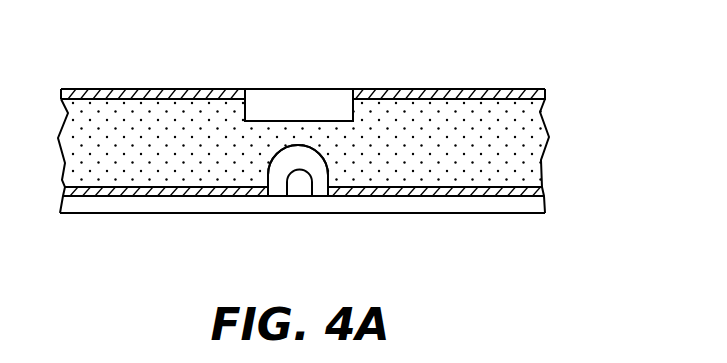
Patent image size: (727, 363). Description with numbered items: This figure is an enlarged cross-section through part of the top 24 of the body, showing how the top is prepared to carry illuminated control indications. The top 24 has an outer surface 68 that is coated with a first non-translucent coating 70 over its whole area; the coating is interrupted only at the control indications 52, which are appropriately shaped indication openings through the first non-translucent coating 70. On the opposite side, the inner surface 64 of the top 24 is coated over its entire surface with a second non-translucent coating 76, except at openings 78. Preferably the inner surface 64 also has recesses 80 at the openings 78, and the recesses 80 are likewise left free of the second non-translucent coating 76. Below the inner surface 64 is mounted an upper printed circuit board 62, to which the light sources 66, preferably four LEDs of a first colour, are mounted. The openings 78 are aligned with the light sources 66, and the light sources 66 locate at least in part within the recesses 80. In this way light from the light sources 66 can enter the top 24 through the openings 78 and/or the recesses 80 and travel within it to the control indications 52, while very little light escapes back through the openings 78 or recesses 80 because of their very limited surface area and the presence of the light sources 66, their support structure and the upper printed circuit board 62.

The top 24 is at (530, 163).
The control indications 52 is at (302, 92).
The upper printed circuit board 62 is at (428, 207).
The inner surface 64 is at (542, 177).
The light sources 66 is at (298, 183).
The outer surface 68 is at (537, 112).
The first non-translucent coating 70 is at (540, 103).
The second non-translucent coating 76 is at (488, 192).
The openings 78 is at (328, 185).
The recesses 80 is at (272, 158).